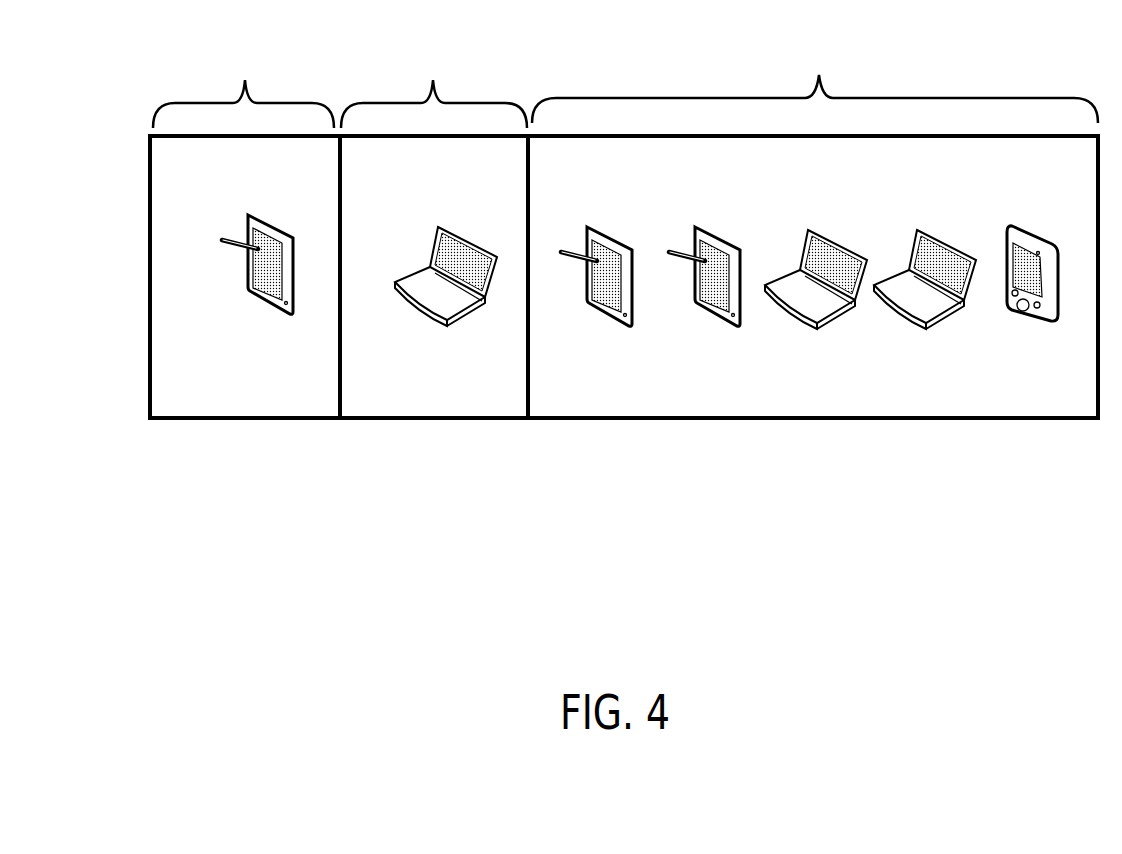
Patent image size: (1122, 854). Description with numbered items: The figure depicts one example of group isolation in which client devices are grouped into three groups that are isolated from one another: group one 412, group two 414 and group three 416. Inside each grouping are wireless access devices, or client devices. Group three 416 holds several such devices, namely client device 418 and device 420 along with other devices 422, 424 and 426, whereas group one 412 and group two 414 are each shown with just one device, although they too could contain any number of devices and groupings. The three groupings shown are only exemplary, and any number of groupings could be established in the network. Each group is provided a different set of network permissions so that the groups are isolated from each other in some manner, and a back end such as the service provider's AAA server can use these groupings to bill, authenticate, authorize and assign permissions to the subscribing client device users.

The group one 412 is at (245, 220).
The group two 414 is at (434, 222).
The group three 416 is at (813, 215).
The client device 418 is at (927, 322).
The device 420 is at (735, 325).
The other device 422 is at (628, 325).
The other device 424 is at (817, 323).
The other device 426 is at (1037, 322).